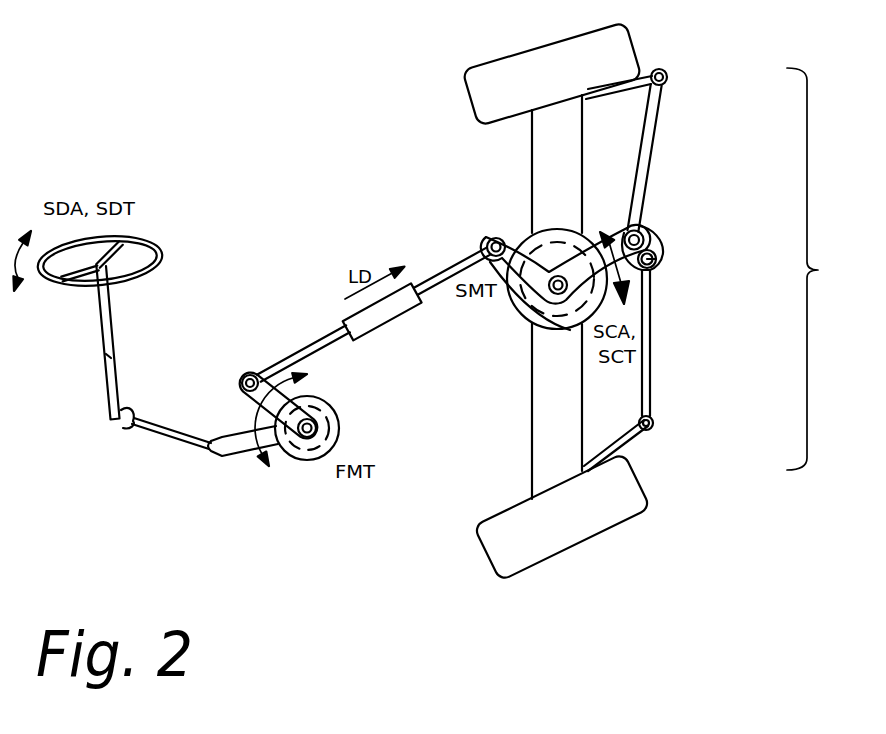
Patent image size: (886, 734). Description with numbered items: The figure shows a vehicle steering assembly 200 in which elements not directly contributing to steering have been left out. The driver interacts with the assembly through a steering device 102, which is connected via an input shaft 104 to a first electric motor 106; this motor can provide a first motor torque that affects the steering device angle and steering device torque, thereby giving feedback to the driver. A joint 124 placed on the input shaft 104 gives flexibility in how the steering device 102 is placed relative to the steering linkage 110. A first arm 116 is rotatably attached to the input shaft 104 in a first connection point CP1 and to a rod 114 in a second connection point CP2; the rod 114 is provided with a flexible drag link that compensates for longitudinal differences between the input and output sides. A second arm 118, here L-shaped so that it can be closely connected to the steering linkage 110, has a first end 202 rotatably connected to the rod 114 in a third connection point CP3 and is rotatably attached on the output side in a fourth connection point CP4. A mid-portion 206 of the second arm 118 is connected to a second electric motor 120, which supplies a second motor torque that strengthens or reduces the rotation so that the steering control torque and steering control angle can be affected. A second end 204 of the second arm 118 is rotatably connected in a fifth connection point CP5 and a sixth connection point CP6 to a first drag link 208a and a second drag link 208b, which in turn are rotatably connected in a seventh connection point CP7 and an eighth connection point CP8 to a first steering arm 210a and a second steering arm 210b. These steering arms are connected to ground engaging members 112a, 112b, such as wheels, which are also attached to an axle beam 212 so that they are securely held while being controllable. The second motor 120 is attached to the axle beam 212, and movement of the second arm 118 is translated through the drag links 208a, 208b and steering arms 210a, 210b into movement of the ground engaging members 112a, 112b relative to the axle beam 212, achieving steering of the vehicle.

The steering assembly 200 is at (130, 110).
The steering device 102 is at (160, 245).
The input shaft 104 is at (112, 360).
The joint 124 is at (125, 425).
The first electric motor 106 is at (326, 455).
The rod 114 is at (300, 353).
The first arm 116 is at (310, 397).
The second arm 118 is at (527, 322).
The second electric motor 120 is at (556, 232).
The first end 202 is at (471, 222).
The second end 204 is at (680, 241).
The mid-portion 206 is at (566, 319).
The first drag link 208a is at (658, 130).
The second drag link 208b is at (652, 365).
The first steering arm 210a is at (647, 90).
The second steering arm 210b is at (605, 450).
The axle beam 212 is at (543, 436).
The first ground engaging member 112a is at (500, 77).
The second ground engaging member 112b is at (507, 530).
The steering linkage 110 is at (835, 269).
The first connection point CP1 is at (318, 428).
The second connection point CP2 is at (250, 376).
The third connection point CP3 is at (488, 248).
The fourth connection point CP4 is at (549, 296).
The fifth connection point CP5 is at (643, 228).
The sixth connection point CP6 is at (660, 262).
The seventh connection point CP7 is at (667, 72).
The eighth connection point CP8 is at (652, 424).